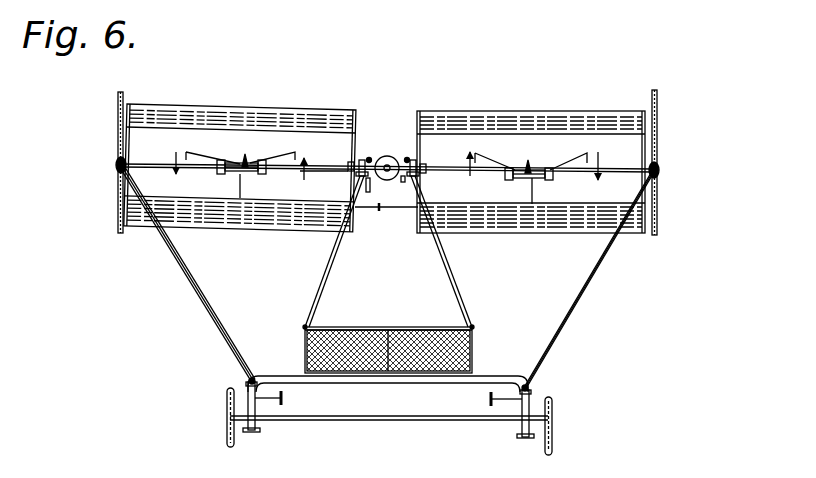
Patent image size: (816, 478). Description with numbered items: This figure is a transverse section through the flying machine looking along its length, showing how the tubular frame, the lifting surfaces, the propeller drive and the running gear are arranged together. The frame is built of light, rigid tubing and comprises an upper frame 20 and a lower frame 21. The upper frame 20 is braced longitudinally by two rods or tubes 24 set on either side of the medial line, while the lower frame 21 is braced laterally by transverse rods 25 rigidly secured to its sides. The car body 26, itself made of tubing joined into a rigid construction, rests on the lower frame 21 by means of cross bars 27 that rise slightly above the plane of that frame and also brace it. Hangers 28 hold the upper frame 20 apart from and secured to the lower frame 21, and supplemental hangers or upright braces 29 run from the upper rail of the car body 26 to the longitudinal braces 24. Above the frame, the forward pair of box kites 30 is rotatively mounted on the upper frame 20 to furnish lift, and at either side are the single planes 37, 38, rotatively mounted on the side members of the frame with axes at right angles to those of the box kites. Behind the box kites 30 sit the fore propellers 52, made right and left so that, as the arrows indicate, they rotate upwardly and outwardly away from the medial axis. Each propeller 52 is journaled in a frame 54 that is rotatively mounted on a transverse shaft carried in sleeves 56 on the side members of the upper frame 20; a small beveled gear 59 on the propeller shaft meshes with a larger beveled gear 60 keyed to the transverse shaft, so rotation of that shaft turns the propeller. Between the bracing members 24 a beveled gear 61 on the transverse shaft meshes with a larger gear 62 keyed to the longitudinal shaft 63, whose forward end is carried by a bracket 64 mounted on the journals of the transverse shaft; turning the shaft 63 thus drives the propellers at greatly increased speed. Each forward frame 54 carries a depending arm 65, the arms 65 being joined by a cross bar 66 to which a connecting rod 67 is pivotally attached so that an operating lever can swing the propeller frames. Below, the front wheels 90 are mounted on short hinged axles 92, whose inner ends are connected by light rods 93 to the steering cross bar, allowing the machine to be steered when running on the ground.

The upper frame 20 is at (113, 164).
The lower frame 21 is at (243, 381).
The longitudinal bracing rods 24 is at (408, 160).
The transverse bracing rods 25 is at (394, 385).
The car body 26 is at (474, 348).
The cross bars 27 is at (311, 385).
The hangers 28 is at (190, 291).
The supplemental supporting hangers 29 is at (318, 297).
The forward box kites 30 is at (204, 104).
The single plane 37 is at (117, 94).
The single plane 38 is at (659, 122).
The fore propellers 52 is at (203, 154).
The propeller frame 54 is at (258, 162).
The sleeves 56 is at (349, 165).
The small beveled gear 59 is at (243, 160).
The large beveled gear 60 is at (249, 175).
The beveled gear 61 is at (358, 176).
The larger gear 62 is at (404, 183).
The longitudinal shaft 63 is at (378, 178).
The bracket 64 is at (420, 177).
The depending arm 65 is at (239, 188).
The cross bar 66 is at (316, 199).
The connecting rod 67 is at (379, 209).
The front wheels 90 is at (226, 403).
The short hinged axles 92 is at (256, 402).
The light rods 93 is at (489, 400).